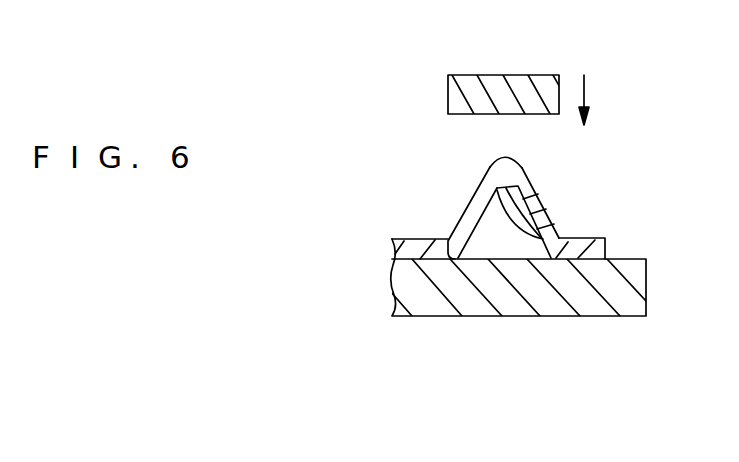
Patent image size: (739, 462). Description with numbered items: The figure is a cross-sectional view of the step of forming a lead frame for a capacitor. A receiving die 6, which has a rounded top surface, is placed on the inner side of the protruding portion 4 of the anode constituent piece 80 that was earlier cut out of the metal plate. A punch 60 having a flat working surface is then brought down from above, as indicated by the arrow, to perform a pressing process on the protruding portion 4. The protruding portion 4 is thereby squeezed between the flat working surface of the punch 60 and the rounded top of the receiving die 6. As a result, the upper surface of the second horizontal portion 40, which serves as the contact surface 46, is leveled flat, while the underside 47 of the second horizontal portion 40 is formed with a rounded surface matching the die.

The protruding portion 4 is at (482, 203).
The receiving die 6 is at (553, 305).
The second horizontal portion 40 is at (518, 183).
The contact surface 46 is at (504, 158).
The underside 47 is at (542, 239).
The punch 60 is at (490, 73).
The anode constituent piece 80 is at (418, 247).